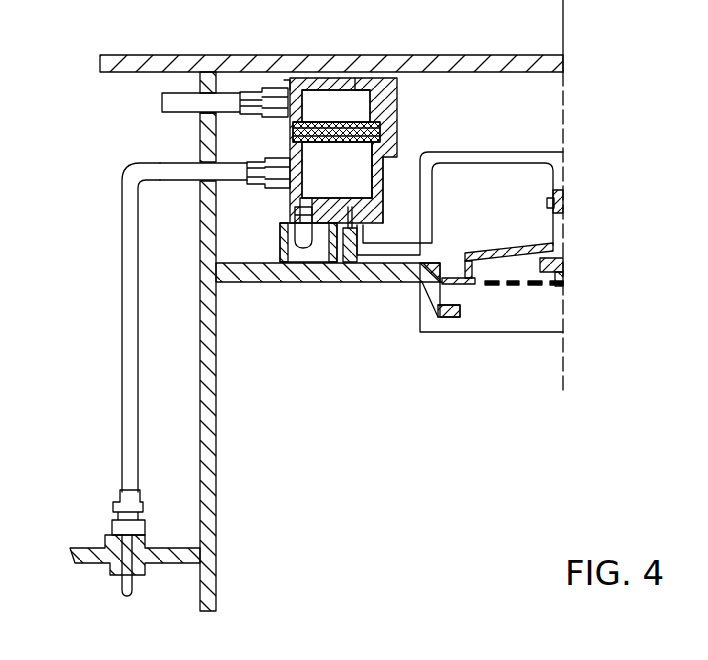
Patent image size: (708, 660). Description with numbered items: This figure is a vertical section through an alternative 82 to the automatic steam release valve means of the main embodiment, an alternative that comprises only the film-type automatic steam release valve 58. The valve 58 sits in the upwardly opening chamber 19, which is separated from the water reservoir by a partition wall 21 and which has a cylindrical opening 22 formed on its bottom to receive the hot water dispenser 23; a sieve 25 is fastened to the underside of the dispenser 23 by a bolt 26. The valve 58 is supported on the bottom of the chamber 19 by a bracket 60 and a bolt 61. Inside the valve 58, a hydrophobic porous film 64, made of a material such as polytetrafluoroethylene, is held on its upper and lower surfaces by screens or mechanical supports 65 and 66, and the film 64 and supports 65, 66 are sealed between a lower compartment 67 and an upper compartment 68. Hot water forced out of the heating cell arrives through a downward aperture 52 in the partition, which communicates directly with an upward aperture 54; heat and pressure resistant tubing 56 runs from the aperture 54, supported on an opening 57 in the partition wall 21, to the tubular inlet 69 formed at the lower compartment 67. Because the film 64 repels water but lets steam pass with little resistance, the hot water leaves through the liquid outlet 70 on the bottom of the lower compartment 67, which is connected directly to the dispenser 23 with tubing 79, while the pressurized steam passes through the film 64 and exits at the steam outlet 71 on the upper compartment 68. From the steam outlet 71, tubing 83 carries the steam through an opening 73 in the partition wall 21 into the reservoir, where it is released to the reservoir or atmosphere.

The chamber 19 is at (483, 95).
The partition wall 21 is at (198, 298).
The cylindrical opening 22 is at (483, 316).
The hot water dispenser 23 is at (530, 248).
The sieve 25 is at (510, 288).
The bolt 26 is at (565, 283).
The downward aperture 52 is at (112, 572).
The upward aperture 54 is at (112, 535).
The heat and pressure resistant tubing 56 is at (118, 395).
The opening 57 is at (199, 193).
The film-type automatic steam release valve 58 is at (403, 101).
The bracket 60 is at (273, 238).
The bolt 61 is at (306, 240).
The hydrophobic porous film 64 is at (385, 128).
The screen or mechanical support 65 is at (352, 114).
The screen or mechanical support 66 is at (352, 150).
The lower compartment 67 is at (386, 173).
The upper compartment 68 is at (385, 85).
The tubular inlet 69 is at (280, 189).
The liquid outlet 70 is at (357, 262).
The steam outlet 71 is at (282, 118).
The opening 73 is at (200, 120).
The tubing 79 is at (517, 167).
The alternative valve means 82 is at (282, 78).
The tubing 83 is at (162, 102).